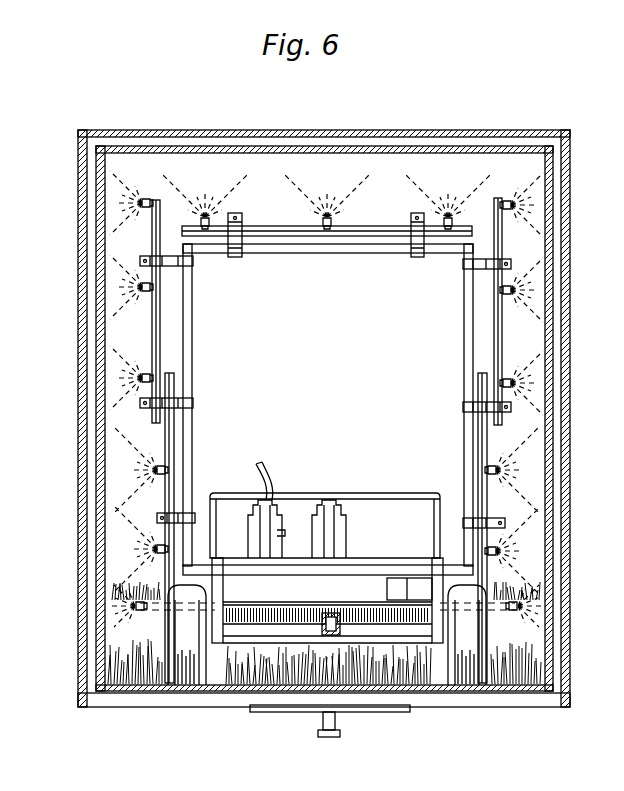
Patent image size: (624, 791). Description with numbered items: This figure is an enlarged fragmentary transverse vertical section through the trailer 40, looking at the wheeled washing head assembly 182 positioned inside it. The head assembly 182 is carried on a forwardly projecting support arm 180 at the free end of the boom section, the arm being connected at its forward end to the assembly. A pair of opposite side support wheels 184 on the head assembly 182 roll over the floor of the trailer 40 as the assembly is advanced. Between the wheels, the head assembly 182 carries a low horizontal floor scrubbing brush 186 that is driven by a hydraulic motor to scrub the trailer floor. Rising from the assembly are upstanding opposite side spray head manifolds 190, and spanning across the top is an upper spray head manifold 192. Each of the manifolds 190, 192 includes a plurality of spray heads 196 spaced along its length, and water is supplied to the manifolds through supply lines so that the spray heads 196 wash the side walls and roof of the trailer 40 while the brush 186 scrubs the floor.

The trailer 40 is at (436, 131).
The support arm 180 is at (322, 636).
The washing head assembly 182 is at (370, 494).
The support wheels 184 is at (183, 688).
The floor scrubbing brush 186 is at (386, 660).
The side spray head manifolds 190 is at (157, 331).
The upper spray head manifold 192 is at (357, 237).
The spray heads 196 is at (322, 225).